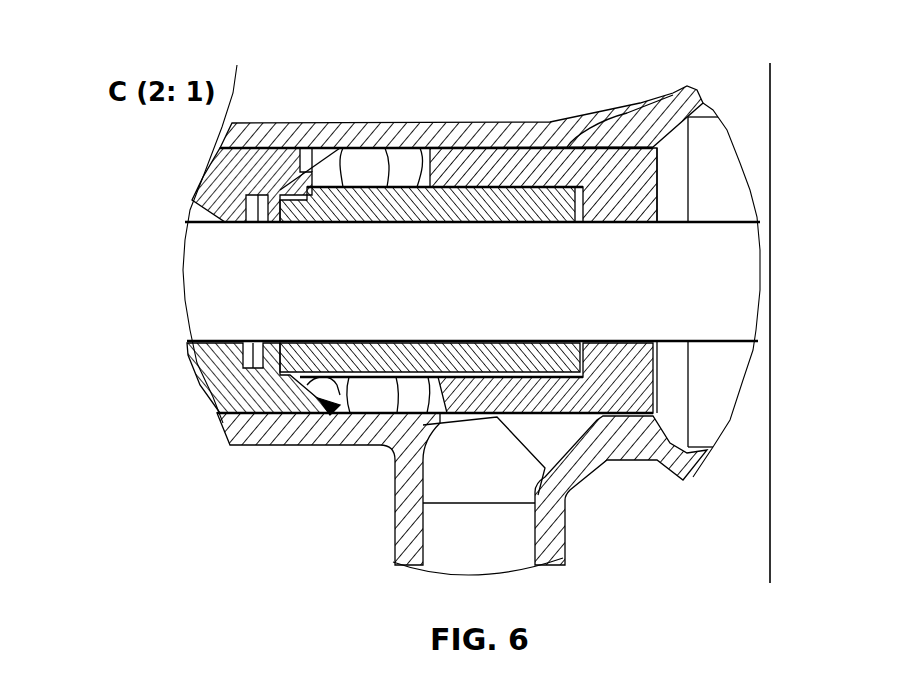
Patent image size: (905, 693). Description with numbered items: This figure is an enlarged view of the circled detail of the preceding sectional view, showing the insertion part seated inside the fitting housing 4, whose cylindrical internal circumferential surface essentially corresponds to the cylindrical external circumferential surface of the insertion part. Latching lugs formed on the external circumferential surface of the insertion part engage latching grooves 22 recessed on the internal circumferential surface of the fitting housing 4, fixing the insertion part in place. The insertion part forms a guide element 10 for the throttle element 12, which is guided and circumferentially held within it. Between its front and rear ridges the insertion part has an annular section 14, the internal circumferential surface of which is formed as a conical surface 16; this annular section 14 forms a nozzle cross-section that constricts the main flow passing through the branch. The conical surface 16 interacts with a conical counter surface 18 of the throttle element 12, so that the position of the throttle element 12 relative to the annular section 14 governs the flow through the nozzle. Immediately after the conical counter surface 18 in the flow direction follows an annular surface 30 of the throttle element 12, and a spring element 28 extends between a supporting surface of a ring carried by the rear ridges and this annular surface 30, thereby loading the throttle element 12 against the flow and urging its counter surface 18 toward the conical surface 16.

The fitting housing 4 is at (683, 90).
The guide element 10 is at (568, 150).
The throttle element 12 is at (412, 147).
The annular section 14 is at (250, 125).
The conical surface 16 is at (308, 150).
The conical counter surface 18 is at (428, 268).
The latching grooves 22 is at (277, 413).
The spring element 28 is at (367, 425).
The annular surface 30 is at (431, 328).